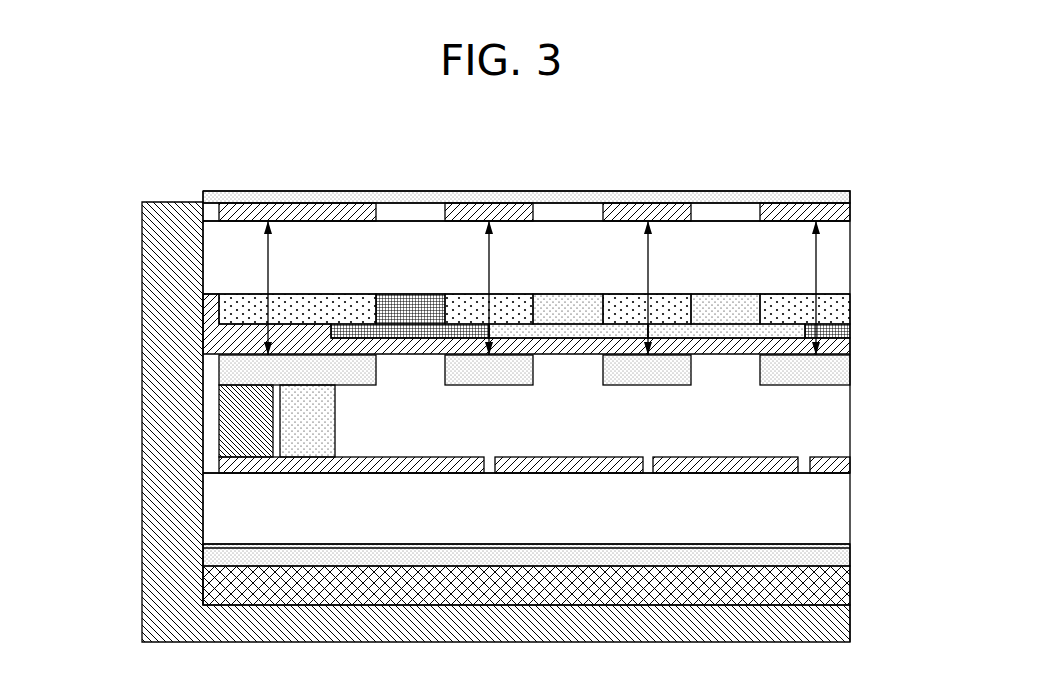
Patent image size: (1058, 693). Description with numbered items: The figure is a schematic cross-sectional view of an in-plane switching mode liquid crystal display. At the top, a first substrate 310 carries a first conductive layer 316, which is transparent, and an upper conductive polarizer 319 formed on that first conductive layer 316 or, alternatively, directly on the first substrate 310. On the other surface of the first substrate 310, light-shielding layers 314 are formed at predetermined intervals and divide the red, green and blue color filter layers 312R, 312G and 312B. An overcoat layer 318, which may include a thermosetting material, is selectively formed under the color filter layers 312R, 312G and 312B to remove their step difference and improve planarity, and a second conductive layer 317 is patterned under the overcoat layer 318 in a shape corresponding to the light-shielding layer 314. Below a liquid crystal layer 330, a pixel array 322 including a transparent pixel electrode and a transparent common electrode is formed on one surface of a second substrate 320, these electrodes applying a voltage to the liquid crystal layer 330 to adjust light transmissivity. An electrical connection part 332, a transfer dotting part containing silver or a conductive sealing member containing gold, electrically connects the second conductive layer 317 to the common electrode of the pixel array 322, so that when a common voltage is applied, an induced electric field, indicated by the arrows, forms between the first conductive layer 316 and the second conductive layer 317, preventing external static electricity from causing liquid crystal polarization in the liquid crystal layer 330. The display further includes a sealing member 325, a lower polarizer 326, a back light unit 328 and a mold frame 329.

The first substrate 310 is at (838, 258).
The red color filter layer 312R is at (405, 300).
The green color filter layer 312G is at (567, 302).
The blue color filter layer 312B is at (727, 302).
The light-shielding layer 314 is at (838, 308).
The first conductive layer 316 is at (843, 212).
The second conductive layer 317 is at (838, 374).
The overcoat layer 318 is at (843, 347).
The upper conductive polarizer 319 is at (843, 195).
The second substrate 320 is at (838, 510).
The pixel array 322 is at (845, 462).
The sealing member 325 is at (337, 422).
The lower polarizer 326 is at (838, 557).
The back light unit 328 is at (838, 589).
The mold frame 329 is at (838, 623).
The liquid crystal layer 330 is at (534, 421).
The electrical connection part 332 is at (228, 430).